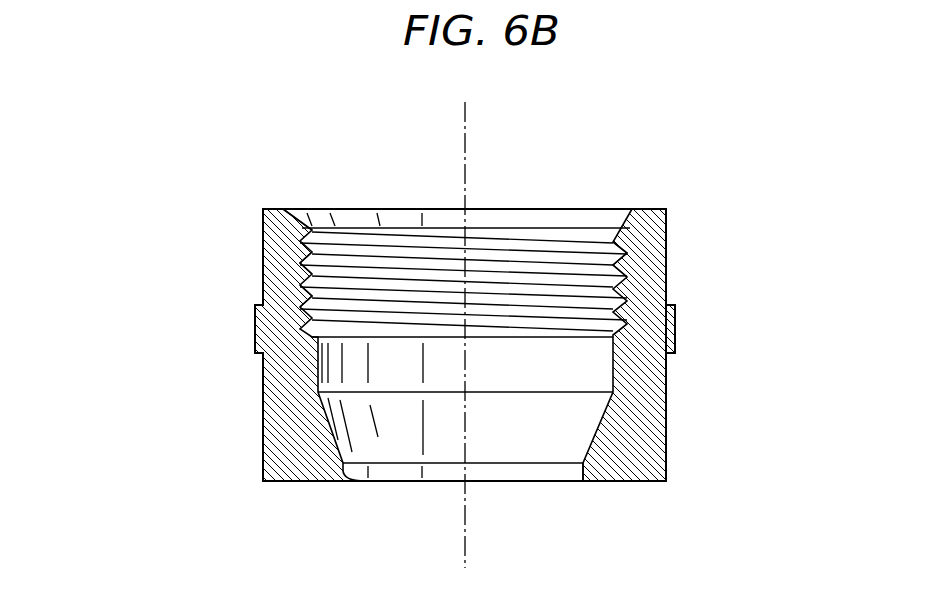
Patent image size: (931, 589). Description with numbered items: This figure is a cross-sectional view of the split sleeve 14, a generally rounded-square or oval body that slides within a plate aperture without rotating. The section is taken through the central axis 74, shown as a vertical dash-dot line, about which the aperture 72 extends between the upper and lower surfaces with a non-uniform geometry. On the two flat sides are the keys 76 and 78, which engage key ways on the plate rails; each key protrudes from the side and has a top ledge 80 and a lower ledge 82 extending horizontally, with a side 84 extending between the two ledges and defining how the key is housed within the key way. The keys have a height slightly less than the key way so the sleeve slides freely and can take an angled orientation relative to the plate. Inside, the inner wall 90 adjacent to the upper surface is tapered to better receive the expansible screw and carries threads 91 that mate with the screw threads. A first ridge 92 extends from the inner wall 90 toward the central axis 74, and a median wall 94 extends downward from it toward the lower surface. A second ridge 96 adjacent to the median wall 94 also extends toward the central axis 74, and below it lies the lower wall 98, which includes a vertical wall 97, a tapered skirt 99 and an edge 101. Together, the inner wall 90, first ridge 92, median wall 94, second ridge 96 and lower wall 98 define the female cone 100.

The split sleeve 14 is at (108, 208).
The aperture 72 is at (500, 242).
The central axis 74 is at (465, 140).
The key 76 is at (770, 278).
The key 78 is at (257, 333).
The top ledge 80 is at (671, 305).
The lower ledge 82 is at (670, 355).
The side 84 is at (676, 333).
The inner wall 90 is at (302, 209).
The threads 91 is at (613, 263).
The first ridge 92 is at (327, 218).
The median wall 94 is at (335, 270).
The second ridge 96 is at (312, 297).
The vertical wall 97 is at (318, 362).
The lower wall 98 is at (339, 482).
The tapered skirt 99 is at (322, 415).
The female cone 100 is at (534, 469).
The edge 101 is at (364, 481).